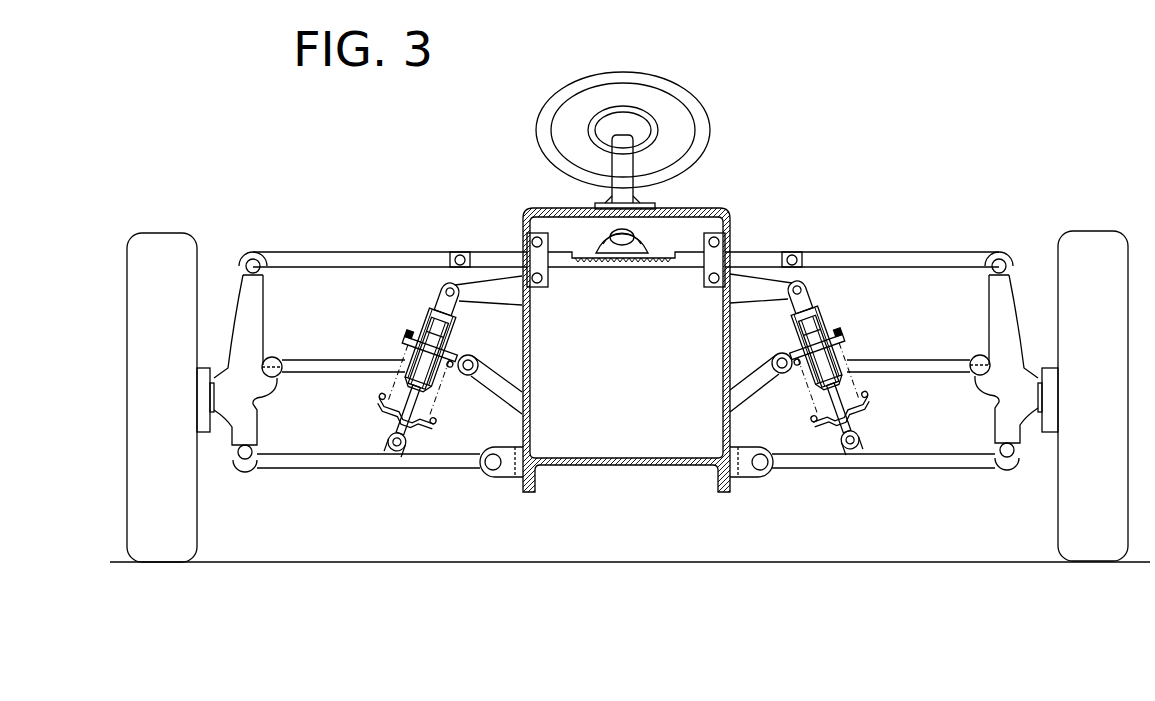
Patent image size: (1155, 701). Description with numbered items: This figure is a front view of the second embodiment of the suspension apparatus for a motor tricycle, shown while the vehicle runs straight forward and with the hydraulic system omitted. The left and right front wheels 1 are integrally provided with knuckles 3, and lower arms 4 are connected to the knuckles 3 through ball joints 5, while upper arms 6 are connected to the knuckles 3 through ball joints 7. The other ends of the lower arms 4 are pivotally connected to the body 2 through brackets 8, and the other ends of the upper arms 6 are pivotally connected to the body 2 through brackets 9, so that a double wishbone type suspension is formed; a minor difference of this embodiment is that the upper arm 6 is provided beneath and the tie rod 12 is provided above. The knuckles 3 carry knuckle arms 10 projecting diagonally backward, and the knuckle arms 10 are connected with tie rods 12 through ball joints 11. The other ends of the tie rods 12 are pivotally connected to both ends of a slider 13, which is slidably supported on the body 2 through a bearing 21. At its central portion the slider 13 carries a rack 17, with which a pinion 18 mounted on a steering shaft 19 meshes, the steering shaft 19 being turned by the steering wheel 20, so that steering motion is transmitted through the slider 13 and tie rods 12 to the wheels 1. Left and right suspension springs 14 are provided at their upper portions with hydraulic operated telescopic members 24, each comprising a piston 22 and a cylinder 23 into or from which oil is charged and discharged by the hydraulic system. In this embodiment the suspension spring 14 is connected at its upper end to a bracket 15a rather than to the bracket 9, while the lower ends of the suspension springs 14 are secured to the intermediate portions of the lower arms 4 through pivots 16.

The front wheel 1 is at (171, 560).
The body 2 is at (722, 352).
The knuckle 3 is at (250, 405).
The lower arm 4 is at (360, 470).
The ball joint 5 is at (245, 471).
The upper arm 6 is at (331, 360).
The ball joint 7 is at (272, 358).
The bracket 8 is at (494, 478).
The bracket 9 is at (487, 384).
The knuckle arm 10 is at (265, 300).
The ball joint 11 is at (254, 257).
The tie rod 12 is at (365, 252).
The slider 13 is at (563, 270).
The suspension spring 14 is at (388, 337).
The bracket 15a is at (520, 300).
The pivot 16 is at (398, 452).
The rack 17 is at (638, 268).
The pinion 18 is at (603, 240).
The steering shaft 19 is at (633, 170).
The steering wheel 20 is at (692, 98).
The bearing 21 is at (530, 255).
The piston 22 is at (446, 345).
The cylinder 23 is at (446, 320).
The hydraulic operated telescopic member 24 is at (420, 319).